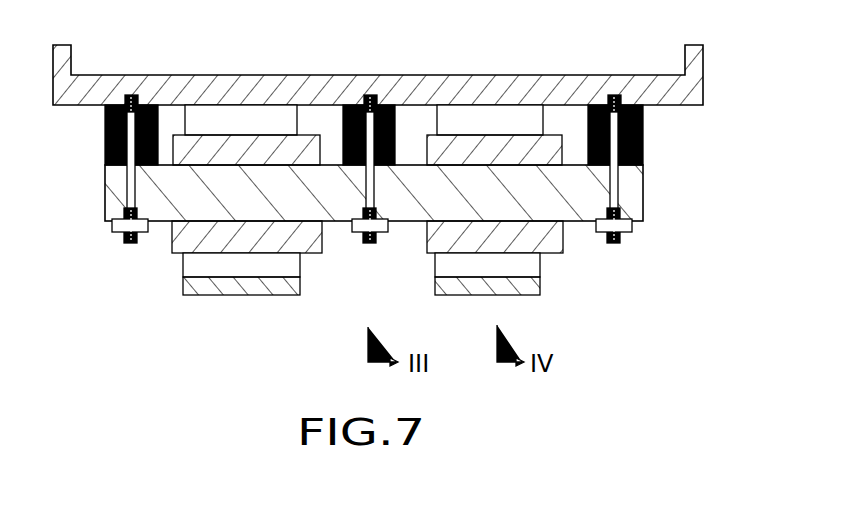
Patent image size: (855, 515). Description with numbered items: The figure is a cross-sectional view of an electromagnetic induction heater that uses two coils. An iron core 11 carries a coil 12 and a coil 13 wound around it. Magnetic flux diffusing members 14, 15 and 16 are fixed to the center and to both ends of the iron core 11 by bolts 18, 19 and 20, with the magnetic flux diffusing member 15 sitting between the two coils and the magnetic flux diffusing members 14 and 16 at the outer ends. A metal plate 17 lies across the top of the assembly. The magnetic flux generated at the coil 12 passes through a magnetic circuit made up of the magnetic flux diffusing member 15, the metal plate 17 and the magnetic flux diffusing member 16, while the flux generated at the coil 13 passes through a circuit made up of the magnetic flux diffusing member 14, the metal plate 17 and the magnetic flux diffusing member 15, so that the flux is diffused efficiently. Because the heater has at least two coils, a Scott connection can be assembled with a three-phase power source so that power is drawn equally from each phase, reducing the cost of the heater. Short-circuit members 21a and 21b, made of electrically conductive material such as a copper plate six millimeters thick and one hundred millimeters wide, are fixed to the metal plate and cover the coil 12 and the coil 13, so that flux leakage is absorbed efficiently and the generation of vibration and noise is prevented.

The iron core 11 is at (625, 202).
The coil 12 is at (240, 150).
The coil 13 is at (518, 150).
The magnetic flux diffusing member 14 is at (643, 145).
The magnetic flux diffusing member 15 is at (395, 150).
The magnetic flux diffusing member 16 is at (105, 128).
The metal plate 17 is at (705, 95).
The bolt 18 is at (613, 245).
The bolt 19 is at (370, 246).
The bolt 20 is at (130, 244).
The short-circuit member 21a is at (232, 294).
The short-circuit member 21b is at (505, 296).